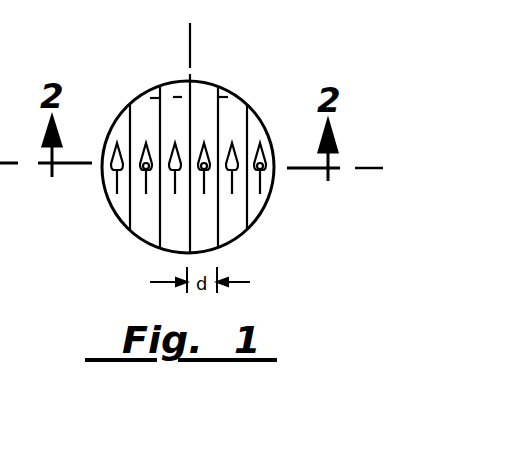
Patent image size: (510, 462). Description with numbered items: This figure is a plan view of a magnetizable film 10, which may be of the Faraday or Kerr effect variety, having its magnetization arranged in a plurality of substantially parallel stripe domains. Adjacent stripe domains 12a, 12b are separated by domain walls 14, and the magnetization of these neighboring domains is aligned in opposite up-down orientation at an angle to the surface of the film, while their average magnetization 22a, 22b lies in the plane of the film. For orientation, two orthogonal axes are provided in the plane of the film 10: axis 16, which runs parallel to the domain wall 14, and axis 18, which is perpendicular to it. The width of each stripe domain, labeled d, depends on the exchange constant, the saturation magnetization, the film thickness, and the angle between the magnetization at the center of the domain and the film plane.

The magnetizable film 10 is at (108, 205).
The stripe domain 12a is at (175, 82).
The stripe domain 12b is at (213, 97).
The domain wall 14 is at (150, 98).
The orthogonal axis 16 is at (192, 37).
The orthogonal axis 18 is at (368, 168).
The average magnetization 22a is at (172, 186).
The average magnetization 22b is at (206, 186).